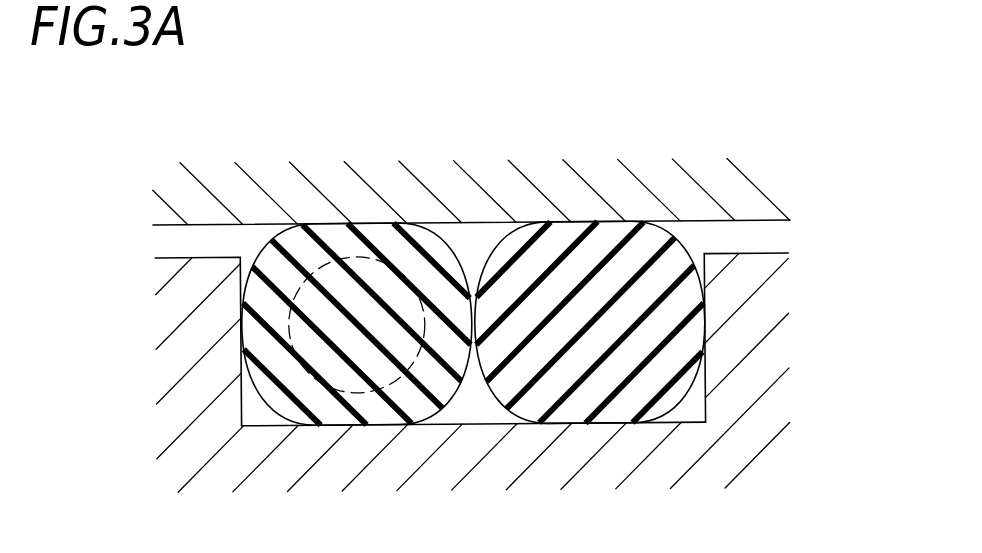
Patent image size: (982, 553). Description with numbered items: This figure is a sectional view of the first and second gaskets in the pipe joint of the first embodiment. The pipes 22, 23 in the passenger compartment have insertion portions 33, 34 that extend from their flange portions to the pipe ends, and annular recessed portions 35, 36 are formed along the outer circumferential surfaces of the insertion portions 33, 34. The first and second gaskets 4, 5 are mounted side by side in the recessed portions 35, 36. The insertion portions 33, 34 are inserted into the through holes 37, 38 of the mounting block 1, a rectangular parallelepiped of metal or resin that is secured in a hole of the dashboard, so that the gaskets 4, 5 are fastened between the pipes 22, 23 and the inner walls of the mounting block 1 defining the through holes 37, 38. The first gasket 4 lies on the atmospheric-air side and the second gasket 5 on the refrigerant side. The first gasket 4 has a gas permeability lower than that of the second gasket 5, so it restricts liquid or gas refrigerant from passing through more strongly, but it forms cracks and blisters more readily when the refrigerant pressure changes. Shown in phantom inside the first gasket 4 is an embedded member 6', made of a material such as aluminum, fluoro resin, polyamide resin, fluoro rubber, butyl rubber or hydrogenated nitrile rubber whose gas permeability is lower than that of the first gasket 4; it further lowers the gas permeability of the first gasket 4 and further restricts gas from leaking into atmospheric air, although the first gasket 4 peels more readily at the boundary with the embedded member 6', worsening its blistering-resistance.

The mounting block 1 is at (713, 185).
The first gasket 4 is at (356, 309).
The second gasket 5 is at (593, 268).
The embedded member 6' is at (357, 394).
The pipe 22 is at (515, 313).
The pipe 23 is at (515, 313).
The insertion portion 33 is at (221, 256).
The insertion portion 34 is at (218, 260).
The recessed portion 35 is at (473, 465).
The recessed portion 36 is at (475, 393).
The through hole 37 is at (789, 321).
The through hole 38 is at (758, 224).